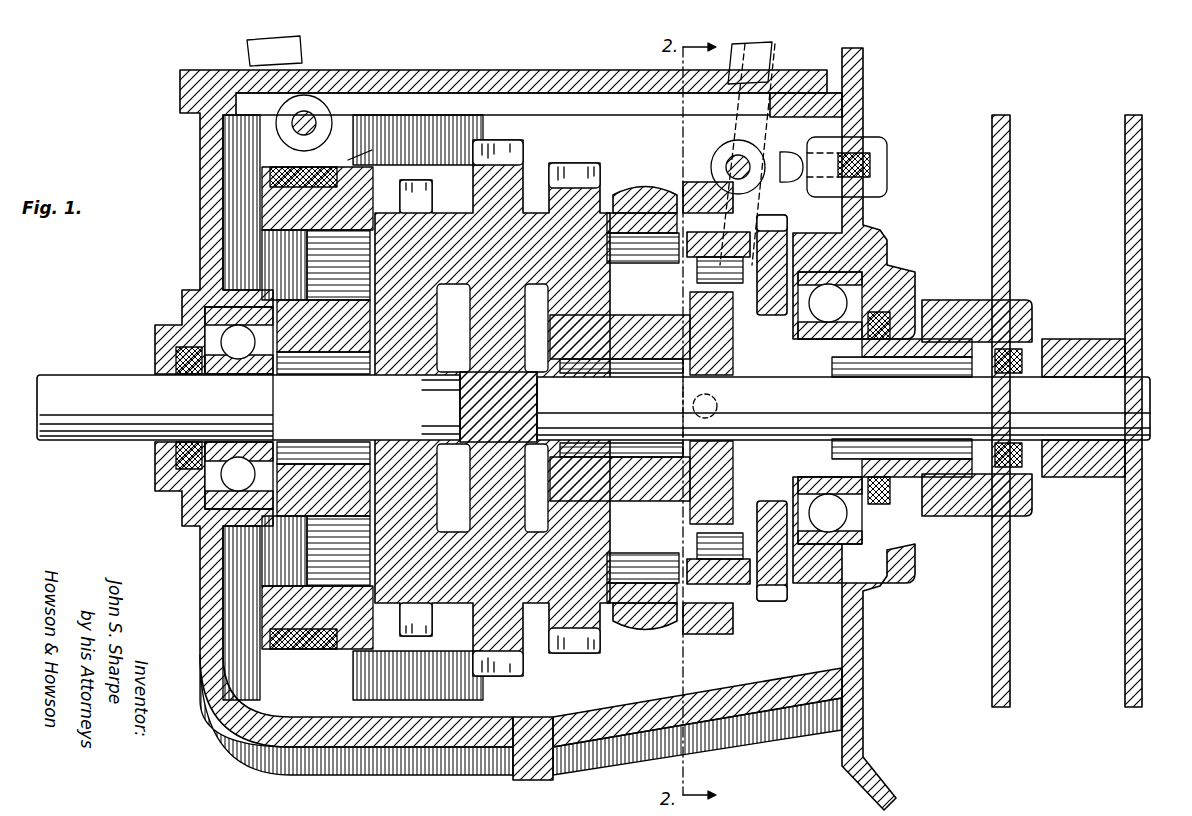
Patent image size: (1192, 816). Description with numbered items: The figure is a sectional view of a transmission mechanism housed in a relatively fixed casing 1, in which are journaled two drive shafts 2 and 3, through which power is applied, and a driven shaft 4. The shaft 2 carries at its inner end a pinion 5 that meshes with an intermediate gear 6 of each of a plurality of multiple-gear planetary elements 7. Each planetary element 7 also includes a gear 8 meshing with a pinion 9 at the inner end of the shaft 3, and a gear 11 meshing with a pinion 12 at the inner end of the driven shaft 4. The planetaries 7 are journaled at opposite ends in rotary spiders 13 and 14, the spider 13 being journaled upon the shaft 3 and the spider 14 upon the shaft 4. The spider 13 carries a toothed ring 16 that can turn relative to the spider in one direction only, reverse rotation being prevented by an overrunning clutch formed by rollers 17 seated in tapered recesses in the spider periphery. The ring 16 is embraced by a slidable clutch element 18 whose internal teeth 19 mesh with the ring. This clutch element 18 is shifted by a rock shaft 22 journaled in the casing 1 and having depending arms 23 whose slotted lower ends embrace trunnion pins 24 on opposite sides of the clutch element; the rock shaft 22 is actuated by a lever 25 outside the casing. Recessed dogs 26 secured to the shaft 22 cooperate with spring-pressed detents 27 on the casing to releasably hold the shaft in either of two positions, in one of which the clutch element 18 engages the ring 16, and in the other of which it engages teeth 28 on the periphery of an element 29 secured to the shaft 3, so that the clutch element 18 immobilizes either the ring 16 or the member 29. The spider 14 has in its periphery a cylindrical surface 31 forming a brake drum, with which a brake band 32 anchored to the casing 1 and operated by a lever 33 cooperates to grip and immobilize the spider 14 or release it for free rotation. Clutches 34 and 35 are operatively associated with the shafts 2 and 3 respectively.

The casing 1 is at (185, 520).
The drive shaft 2 is at (1130, 398).
The drive shaft 3 is at (1022, 338).
The driven shaft 4 is at (85, 380).
The pinion 5 is at (537, 388).
The intermediate gear 6 is at (520, 160).
The multiple-gear planetary element 7 is at (492, 408).
The gear 8 is at (590, 168).
The pinion 9 is at (552, 342).
The gear 11 is at (416, 180).
The pinion 12 is at (436, 338).
The rotary spider 13 is at (650, 186).
The rotary spider 14 is at (371, 147).
The toothed ring 16 is at (690, 238).
The roller 17 is at (738, 592).
The clutch element 18 is at (700, 634).
The internal teeth 19 is at (728, 207).
The rock shaft 22 is at (738, 155).
The depending arm 23 is at (735, 402).
The trunnion pin 24 is at (695, 398).
The lever 25 is at (770, 46).
The recessed dog 26 is at (780, 155).
The spring-pressed detent 27 is at (793, 196).
The teeth 28 is at (777, 600).
The element 29 is at (795, 588).
The cylindrical surface 31 is at (317, 270).
The brake band 32 is at (300, 630).
The lever 33 is at (300, 45).
The clutch 34 is at (1128, 140).
The clutch 35 is at (1010, 190).